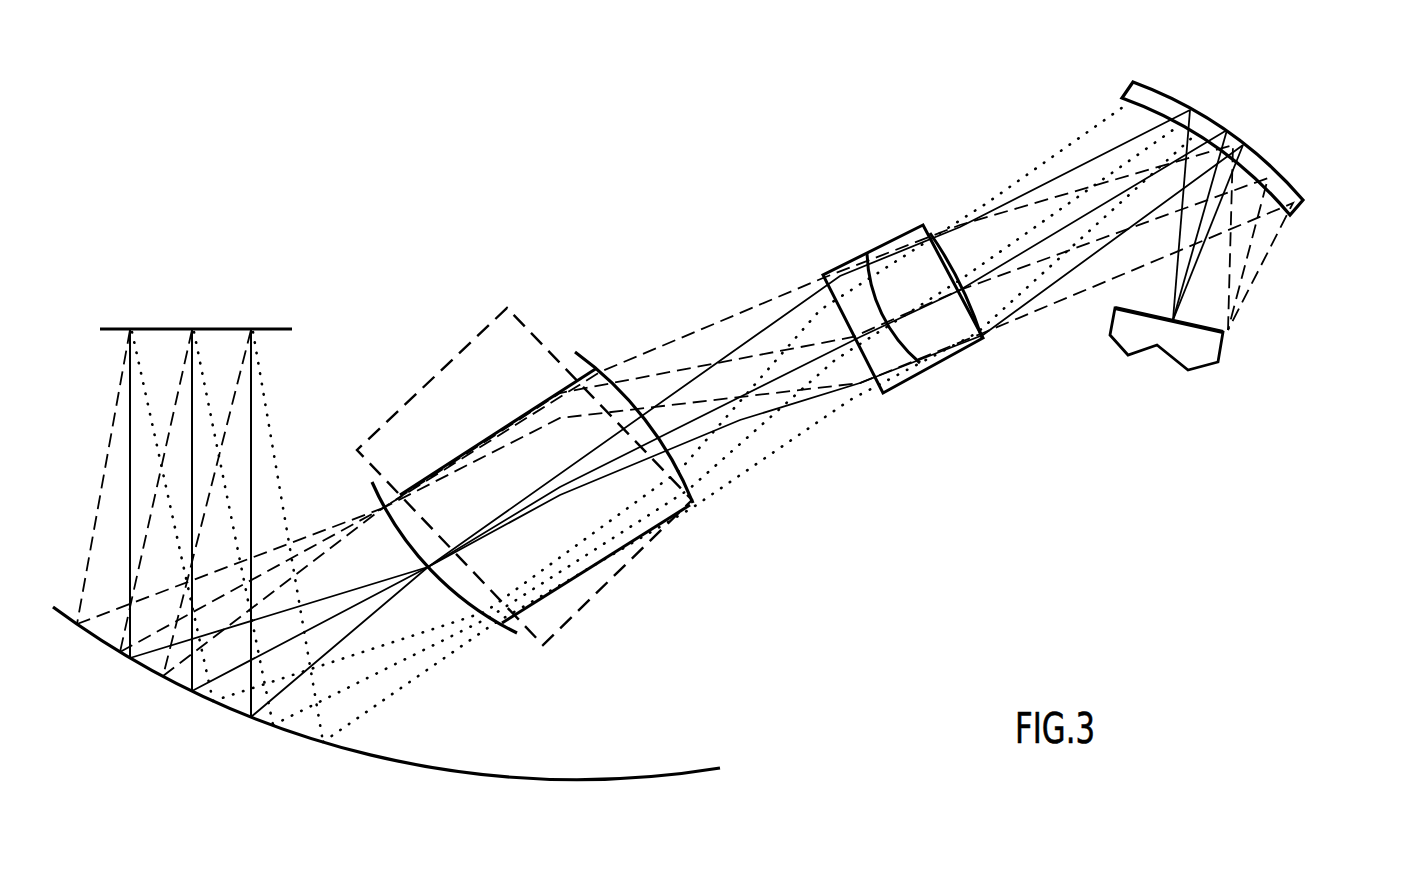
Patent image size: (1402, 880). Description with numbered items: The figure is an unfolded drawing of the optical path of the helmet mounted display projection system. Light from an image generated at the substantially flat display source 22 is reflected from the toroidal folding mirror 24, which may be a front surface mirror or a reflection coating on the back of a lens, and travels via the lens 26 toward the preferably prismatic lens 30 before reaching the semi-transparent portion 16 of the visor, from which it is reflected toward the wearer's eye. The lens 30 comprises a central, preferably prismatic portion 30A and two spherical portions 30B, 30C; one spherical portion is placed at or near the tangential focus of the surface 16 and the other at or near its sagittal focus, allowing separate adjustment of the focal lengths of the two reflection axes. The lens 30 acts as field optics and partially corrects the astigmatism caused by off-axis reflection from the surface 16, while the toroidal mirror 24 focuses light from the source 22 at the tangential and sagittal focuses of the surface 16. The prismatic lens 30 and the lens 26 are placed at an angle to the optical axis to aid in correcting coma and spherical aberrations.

The semi-transparent portion 16 is at (110, 693).
The display source 22 is at (1222, 348).
The toroidal folding mirror 24 is at (1265, 157).
The lens 26 is at (947, 357).
The prismatic lens 30 is at (584, 509).
The central prismatic portion 30A is at (598, 593).
The spherical portion 30B is at (672, 447).
The spherical portion 30C is at (450, 587).